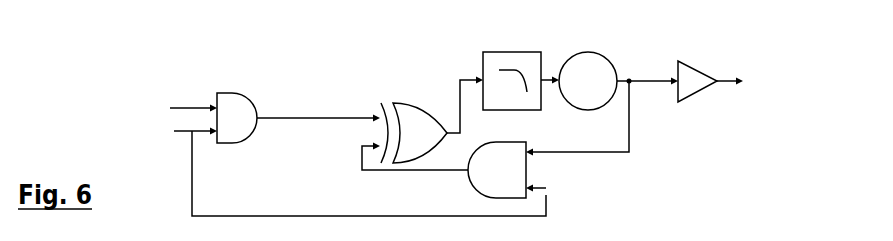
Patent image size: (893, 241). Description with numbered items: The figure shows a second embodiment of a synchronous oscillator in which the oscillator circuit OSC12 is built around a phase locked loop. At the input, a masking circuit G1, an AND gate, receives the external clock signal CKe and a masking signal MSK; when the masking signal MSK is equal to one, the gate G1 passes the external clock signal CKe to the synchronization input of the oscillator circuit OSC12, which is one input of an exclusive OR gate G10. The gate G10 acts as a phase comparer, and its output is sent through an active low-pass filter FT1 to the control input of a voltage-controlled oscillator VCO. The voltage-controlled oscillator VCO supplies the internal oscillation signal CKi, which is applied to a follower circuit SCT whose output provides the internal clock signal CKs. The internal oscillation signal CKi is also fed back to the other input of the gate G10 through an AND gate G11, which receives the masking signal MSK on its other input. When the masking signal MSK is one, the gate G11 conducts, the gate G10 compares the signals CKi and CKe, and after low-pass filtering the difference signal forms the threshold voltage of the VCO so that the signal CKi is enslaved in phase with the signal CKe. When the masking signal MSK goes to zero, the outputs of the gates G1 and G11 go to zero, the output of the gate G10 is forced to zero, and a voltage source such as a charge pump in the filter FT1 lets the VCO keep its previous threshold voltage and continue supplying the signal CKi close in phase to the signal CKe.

The oscillator circuit OSC12 is at (372, 59).
The external clock signal CKe is at (177, 107).
The masking signal MSK is at (342, 169).
The masking circuit G1 is at (237, 118).
The gate of the exclusive OR type G10 is at (432, 120).
The active low-pass filter FT1 is at (480, 72).
The voltage-controlled oscillator VCO is at (570, 89).
The internal oscillation signal CKi is at (590, 111).
The follower circuit SCT is at (697, 92).
The internal clock signal CKs is at (746, 81).
The gate of the AND type G11 is at (444, 170).